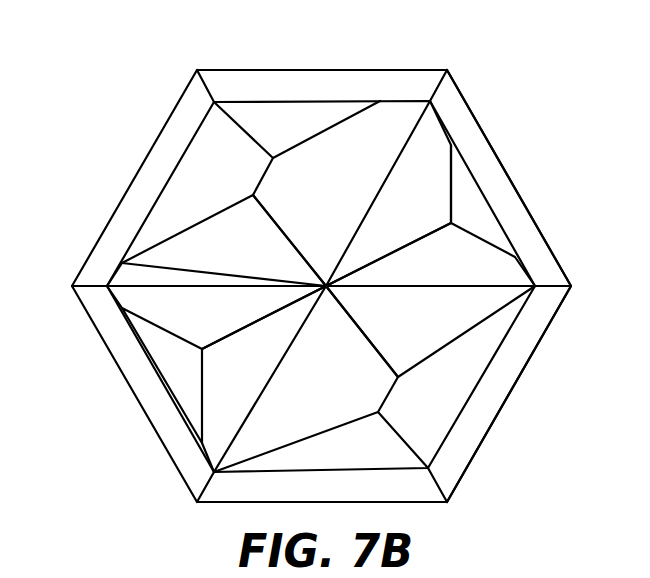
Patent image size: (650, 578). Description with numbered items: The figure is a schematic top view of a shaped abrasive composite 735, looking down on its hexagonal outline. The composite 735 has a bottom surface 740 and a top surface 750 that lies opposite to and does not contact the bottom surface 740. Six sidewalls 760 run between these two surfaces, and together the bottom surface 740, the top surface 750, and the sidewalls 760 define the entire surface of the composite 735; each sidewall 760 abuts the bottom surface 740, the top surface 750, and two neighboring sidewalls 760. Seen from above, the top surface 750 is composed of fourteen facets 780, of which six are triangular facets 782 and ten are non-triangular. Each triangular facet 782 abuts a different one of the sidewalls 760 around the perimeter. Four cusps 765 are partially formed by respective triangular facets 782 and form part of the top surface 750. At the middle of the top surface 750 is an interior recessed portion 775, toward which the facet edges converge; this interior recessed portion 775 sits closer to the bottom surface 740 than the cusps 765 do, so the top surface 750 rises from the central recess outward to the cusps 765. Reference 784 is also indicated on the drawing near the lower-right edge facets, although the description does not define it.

The shaped abrasive composite 735 is at (520, 65).
The bottom surface 740 is at (148, 422).
The top surface 750 is at (433, 155).
The sidewalls 760 is at (538, 250).
The cusps 765 is at (248, 192).
The interior recessed portion 775 is at (318, 283).
The facets 780 is at (212, 132).
The triangular facets 782 is at (482, 200).
The ridge lines 784 is at (482, 347).